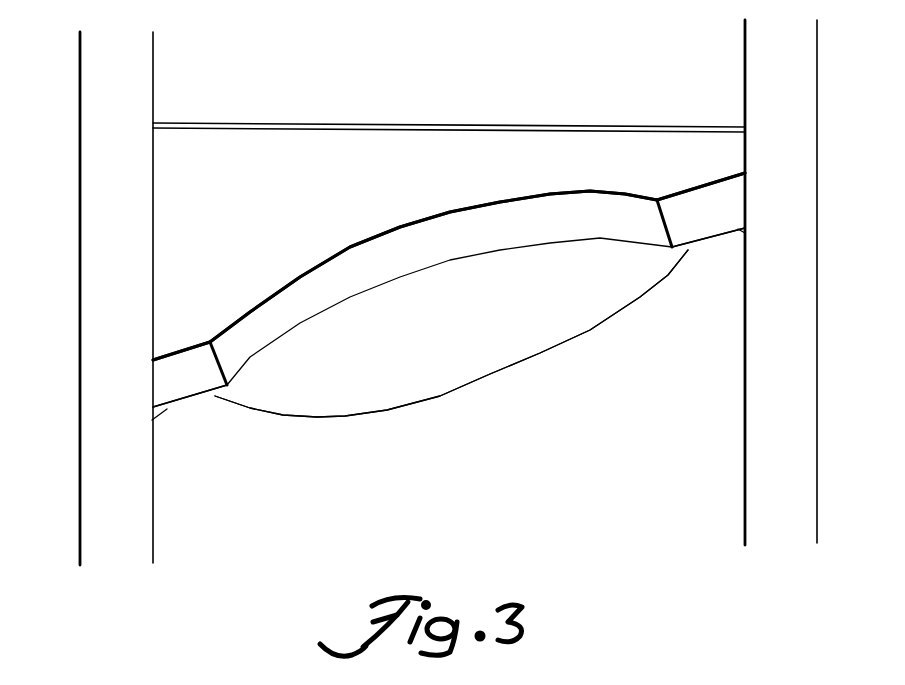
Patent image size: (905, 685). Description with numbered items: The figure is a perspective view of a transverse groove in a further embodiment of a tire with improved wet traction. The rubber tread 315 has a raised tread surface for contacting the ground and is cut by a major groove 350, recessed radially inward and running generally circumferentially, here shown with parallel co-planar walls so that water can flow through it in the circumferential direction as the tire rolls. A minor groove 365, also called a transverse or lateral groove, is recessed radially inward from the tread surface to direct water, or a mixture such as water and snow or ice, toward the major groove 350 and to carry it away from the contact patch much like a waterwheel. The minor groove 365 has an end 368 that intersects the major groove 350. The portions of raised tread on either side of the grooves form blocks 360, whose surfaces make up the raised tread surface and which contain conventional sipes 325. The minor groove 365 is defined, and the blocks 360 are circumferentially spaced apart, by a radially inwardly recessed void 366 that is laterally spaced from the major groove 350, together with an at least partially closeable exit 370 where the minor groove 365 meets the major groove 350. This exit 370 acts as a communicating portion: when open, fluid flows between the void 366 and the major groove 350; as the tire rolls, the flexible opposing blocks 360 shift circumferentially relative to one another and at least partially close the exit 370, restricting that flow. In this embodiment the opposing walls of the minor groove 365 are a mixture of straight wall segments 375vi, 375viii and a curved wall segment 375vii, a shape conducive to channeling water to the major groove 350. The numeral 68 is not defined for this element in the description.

The rubber tread 315 is at (53, 292).
The sipes 325 is at (352, 124).
The major groove 350 is at (110, 488).
The blocks 360 is at (537, 112).
The minor groove 365 is at (443, 215).
The void 366 is at (461, 336).
The end 368 is at (153, 420).
The at least partially closeable exit 370 is at (142, 347).
The edge 68 is at (739, 229).
The straight wall segment 375vi is at (170, 370).
The curved wall segment 375vii is at (665, 292).
The straight wall segment 375viii is at (283, 297).